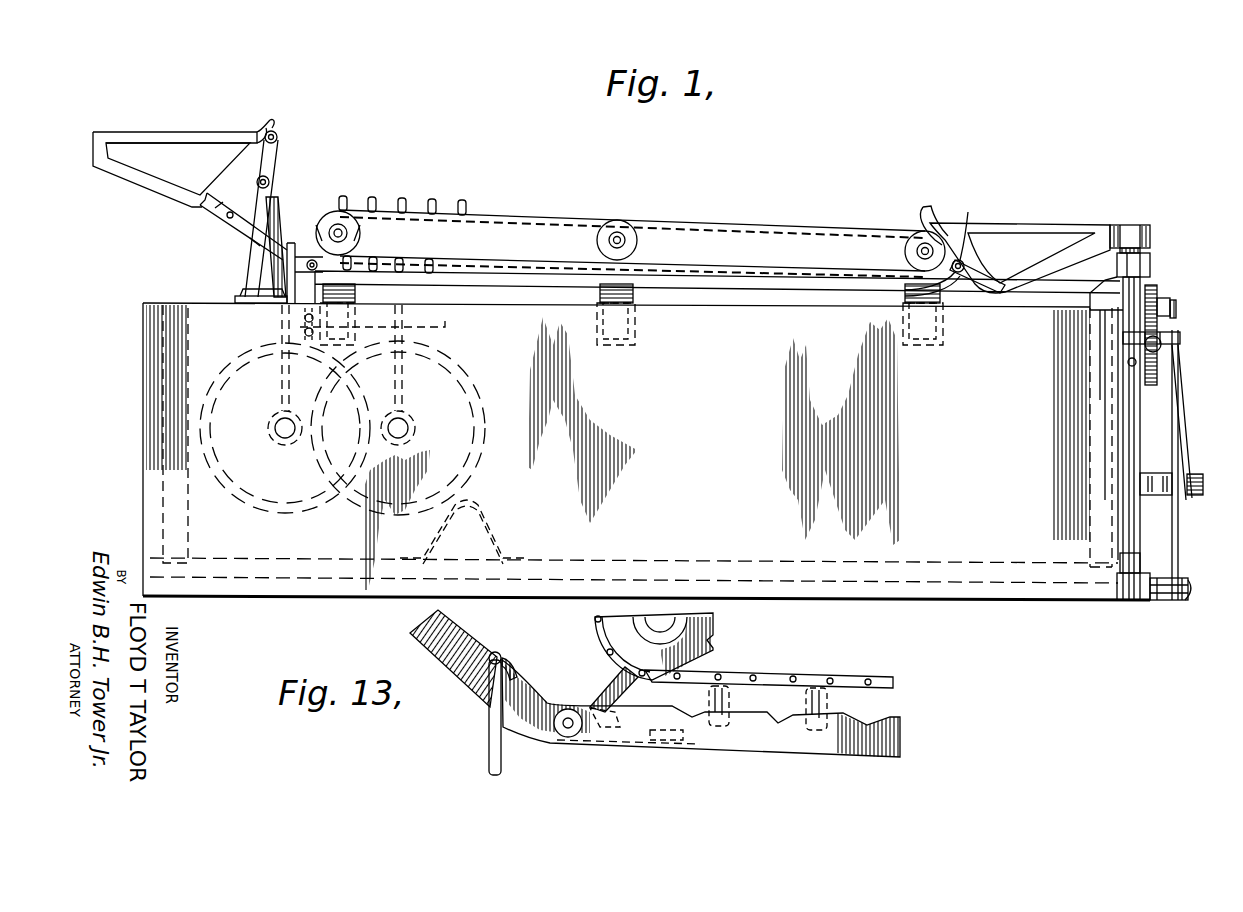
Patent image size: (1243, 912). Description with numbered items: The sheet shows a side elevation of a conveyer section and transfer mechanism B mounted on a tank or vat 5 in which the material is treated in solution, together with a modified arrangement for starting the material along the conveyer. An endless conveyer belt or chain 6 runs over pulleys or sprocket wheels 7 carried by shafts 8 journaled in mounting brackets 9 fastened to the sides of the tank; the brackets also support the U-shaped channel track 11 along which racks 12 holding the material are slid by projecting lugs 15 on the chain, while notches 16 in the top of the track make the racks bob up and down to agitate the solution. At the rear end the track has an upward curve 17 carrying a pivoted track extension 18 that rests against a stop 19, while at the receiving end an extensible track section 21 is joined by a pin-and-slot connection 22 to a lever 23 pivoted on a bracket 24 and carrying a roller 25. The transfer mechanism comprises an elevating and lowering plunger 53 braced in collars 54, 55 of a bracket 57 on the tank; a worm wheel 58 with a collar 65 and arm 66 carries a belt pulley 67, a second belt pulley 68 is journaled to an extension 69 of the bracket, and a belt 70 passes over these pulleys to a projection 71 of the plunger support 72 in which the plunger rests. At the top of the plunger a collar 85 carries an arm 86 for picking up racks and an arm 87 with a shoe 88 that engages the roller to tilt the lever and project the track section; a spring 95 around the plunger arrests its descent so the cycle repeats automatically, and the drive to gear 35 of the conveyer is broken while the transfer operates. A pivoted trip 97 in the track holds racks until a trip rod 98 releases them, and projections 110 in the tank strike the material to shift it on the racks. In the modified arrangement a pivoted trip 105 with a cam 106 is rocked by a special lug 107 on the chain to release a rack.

In FIG. 1, the tank or vat 5 is at (142, 362).
In FIG. 1, the endless conveyer belt or chain 6 is at (530, 218).
In FIG. 13, the endless conveyer belt or chain 6 is at (782, 672).
In FIG. 1, the pulleys or sprocket wheels 7 is at (348, 233).
In FIG. 1, the shafts 8 is at (362, 243).
In FIG. 1, the mounting brackets 9 is at (355, 292).
In FIG. 1, the U-shaped channel track 11 is at (492, 278).
In FIG. 13, the U-shaped channel track 11 is at (765, 735).
In FIG. 1, the racks 12 is at (290, 311).
In FIG. 13, the racks 12 is at (489, 735).
In FIG. 1, the projecting lugs 15 is at (466, 204).
In FIG. 13, the projecting lugs 15 is at (731, 700).
In FIG. 1, the notches 16 is at (402, 270).
In FIG. 1, the upward curve 17 is at (948, 290).
In FIG. 1, the track extension 18 is at (990, 280).
In FIG. 1, the stop 19 is at (968, 212).
In FIG. 1, the extensible track section 21 is at (222, 203).
In FIG. 1, the pin-and-slot connection 22 is at (280, 208).
In FIG. 1, the lever 23 is at (281, 158).
In FIG. 1, the bracket 24 is at (258, 286).
In FIG. 1, the roller 25 is at (277, 130).
In FIG. 1, the gear 35 is at (1180, 400).
In FIG. 1, the elevating and lowering plunger 53 is at (1141, 445).
In FIG. 1, the collar 54 is at (1150, 268).
In FIG. 1, the collar 55 is at (1128, 362).
In FIG. 1, the bracket 57 is at (1098, 360).
In FIG. 1, the worm wheel 58 is at (1157, 286).
In FIG. 1, the collar 65 is at (1170, 300).
In FIG. 1, the arm 66 is at (1176, 316).
In FIG. 1, the belt pulley 67 is at (1180, 337).
In FIG. 1, the second belt pulley 68 is at (1198, 474).
In FIG. 1, the extension 69 is at (1160, 496).
In FIG. 1, the belt 70 is at (1148, 572).
In FIG. 1, the projection 71 is at (1186, 600).
In FIG. 1, the plunger support 72 is at (1150, 580).
In FIG. 1, the collar 85 is at (1150, 230).
In FIG. 1, the arm 86 is at (1070, 245).
In FIG. 1, the arm 87 is at (1047, 223).
In FIG. 1, the shoe 88 is at (925, 206).
In FIG. 1, the spring 95 is at (1141, 250).
In FIG. 1, the pivoted trip 97 is at (298, 248).
In FIG. 1, the trip rod 98 is at (447, 326).
In FIG. 13, the pivoted trip 105 is at (518, 668).
In FIG. 13, the cam 106 is at (670, 742).
In FIG. 13, the special lug 107 is at (613, 690).
In FIG. 1, the projections 110 is at (490, 538).
In FIG. 1, the transfer mechanism B is at (1133, 211).